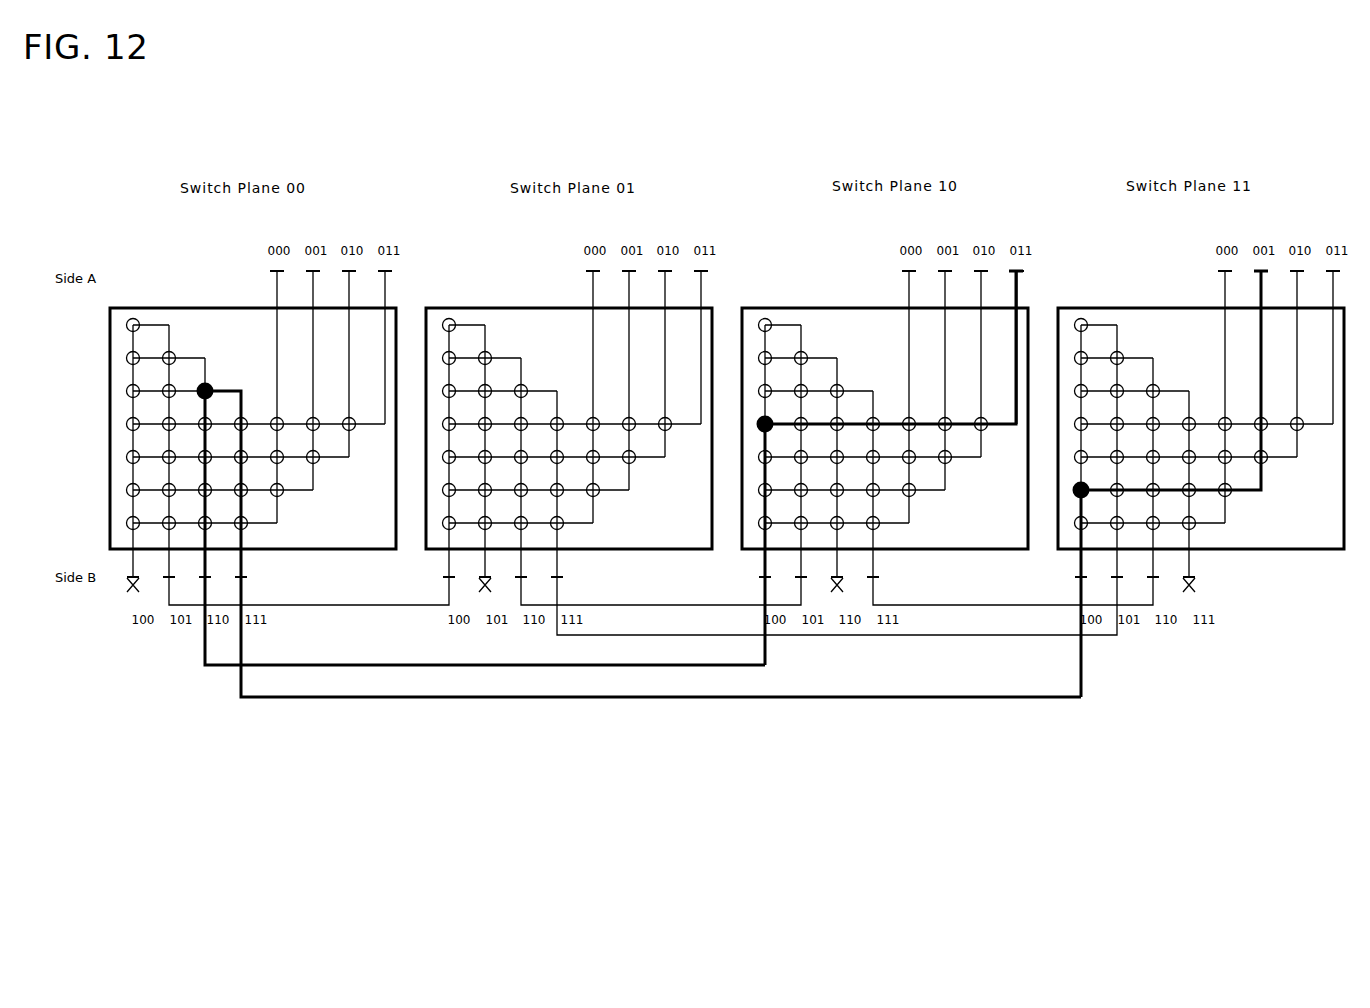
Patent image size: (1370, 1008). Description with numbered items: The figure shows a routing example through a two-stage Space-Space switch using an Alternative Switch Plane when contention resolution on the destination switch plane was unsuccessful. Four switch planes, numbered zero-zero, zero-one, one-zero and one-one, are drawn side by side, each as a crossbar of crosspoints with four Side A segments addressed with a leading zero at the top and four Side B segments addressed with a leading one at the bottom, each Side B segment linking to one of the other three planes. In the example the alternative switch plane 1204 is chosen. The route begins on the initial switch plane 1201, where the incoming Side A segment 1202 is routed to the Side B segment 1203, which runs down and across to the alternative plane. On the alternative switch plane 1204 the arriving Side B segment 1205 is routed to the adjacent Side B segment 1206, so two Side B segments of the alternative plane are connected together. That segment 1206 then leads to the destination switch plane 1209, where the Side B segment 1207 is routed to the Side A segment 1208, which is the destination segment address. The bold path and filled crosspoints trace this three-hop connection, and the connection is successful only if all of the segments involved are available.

The switch plane 10 1201 is at (760, 307).
The segment 011 of switch plane 10 1202 is at (1018, 270).
The segment 100 of switch plane 10 1203 is at (763, 576).
The alternative switch plane 00 1204 is at (130, 308).
The segment 110 of switch plane 00 1205 is at (205, 580).
The segment 111 of switch plane 00 1206 is at (243, 580).
The segment 100 of switch plane 11 1207 is at (1083, 578).
The segment 001 of switch plane 11 1208 is at (1258, 272).
The switch plane 11 1209 is at (1225, 548).